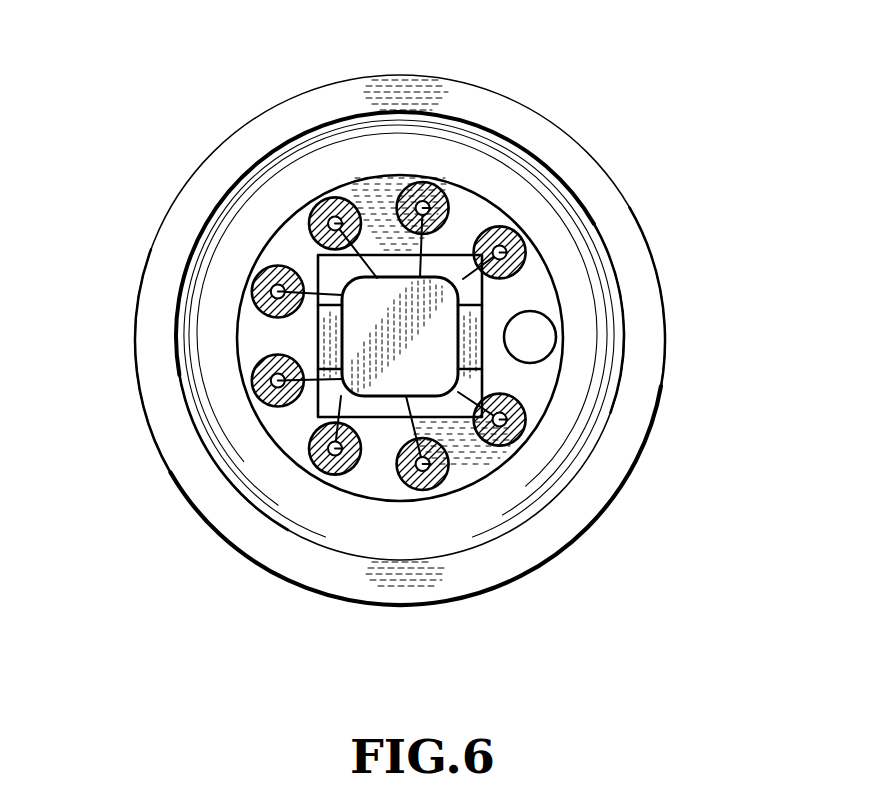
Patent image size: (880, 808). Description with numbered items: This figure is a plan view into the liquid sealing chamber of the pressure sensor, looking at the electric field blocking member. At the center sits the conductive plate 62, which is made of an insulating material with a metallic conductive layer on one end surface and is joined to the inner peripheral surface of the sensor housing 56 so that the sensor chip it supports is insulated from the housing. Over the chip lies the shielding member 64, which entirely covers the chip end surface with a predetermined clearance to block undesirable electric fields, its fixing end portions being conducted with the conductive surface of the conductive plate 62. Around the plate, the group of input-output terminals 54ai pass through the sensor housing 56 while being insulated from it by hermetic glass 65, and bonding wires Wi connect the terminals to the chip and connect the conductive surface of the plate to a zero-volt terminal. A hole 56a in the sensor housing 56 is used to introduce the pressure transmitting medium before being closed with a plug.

The conductive plate 62 is at (385, 265).
The group of input-output terminals 54ai is at (423, 183).
The shielding member 64 is at (430, 288).
The bonding wire Wi is at (490, 288).
The hole 56a is at (552, 345).
The sensor housing 56 is at (555, 455).
The hermetic glass 65 is at (430, 478).